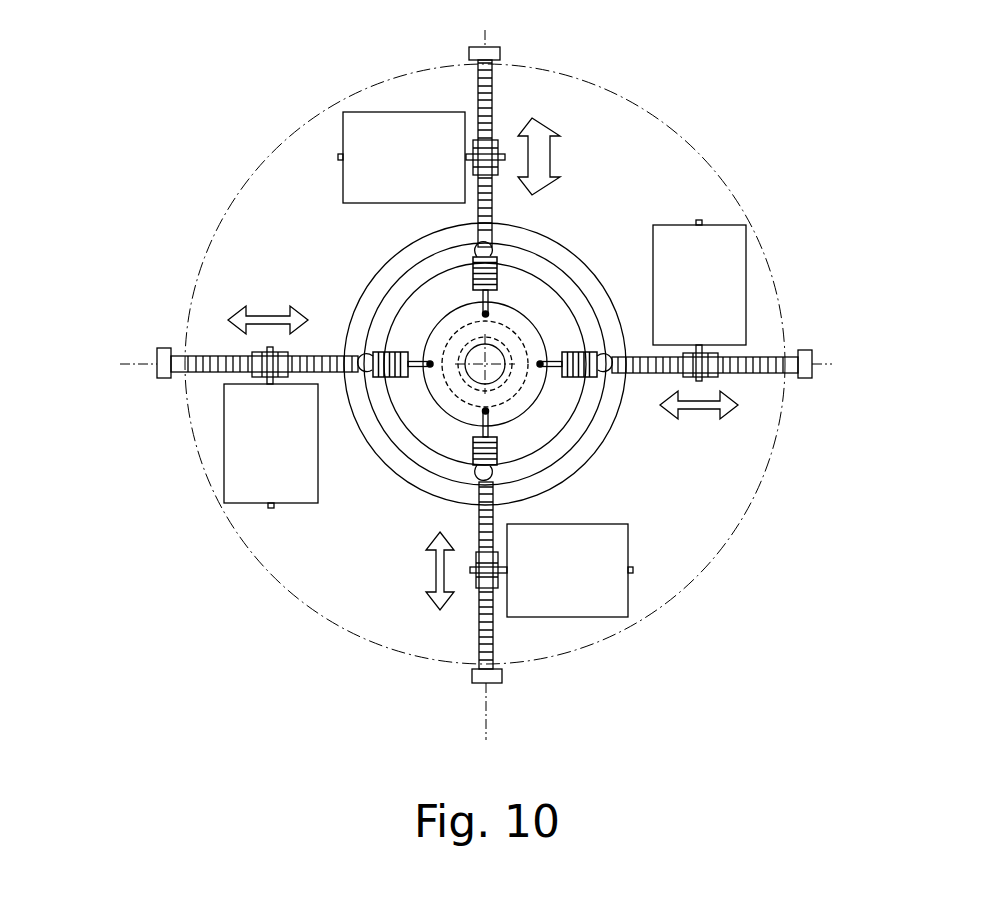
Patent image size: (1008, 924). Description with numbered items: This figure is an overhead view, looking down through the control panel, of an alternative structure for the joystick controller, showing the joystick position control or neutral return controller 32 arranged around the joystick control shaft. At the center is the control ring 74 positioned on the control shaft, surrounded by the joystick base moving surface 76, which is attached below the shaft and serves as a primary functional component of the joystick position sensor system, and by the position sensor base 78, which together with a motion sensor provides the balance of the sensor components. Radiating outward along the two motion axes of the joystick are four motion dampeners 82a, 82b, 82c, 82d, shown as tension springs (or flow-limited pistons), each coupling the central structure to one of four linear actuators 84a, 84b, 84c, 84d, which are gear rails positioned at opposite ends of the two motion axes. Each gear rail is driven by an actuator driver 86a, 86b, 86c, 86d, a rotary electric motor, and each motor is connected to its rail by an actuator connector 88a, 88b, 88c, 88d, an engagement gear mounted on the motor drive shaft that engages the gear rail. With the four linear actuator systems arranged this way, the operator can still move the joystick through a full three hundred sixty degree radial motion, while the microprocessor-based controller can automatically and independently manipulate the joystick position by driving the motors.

The neutral return controller 32 is at (218, 180).
The control ring 74 is at (520, 402).
The joystick base moving surface 76 is at (423, 307).
The position sensor base 78 is at (552, 315).
The motion dampener 82a is at (393, 353).
The motion dampener 82b is at (598, 373).
The motion dampener 82c is at (497, 283).
The motion dampener 82d is at (487, 450).
The linear actuator 84a is at (200, 362).
The linear actuator 84b is at (760, 365).
The linear actuator 84c is at (493, 102).
The linear actuator 84d is at (480, 637).
The actuator driver 86a is at (252, 456).
The actuator driver 86b is at (680, 298).
The actuator driver 86c is at (376, 171).
The actuator driver 86d is at (543, 583).
The actuator connector 88a is at (250, 355).
The actuator connector 88b is at (717, 375).
The actuator connector 88c is at (493, 140).
The actuator connector 88d is at (477, 590).